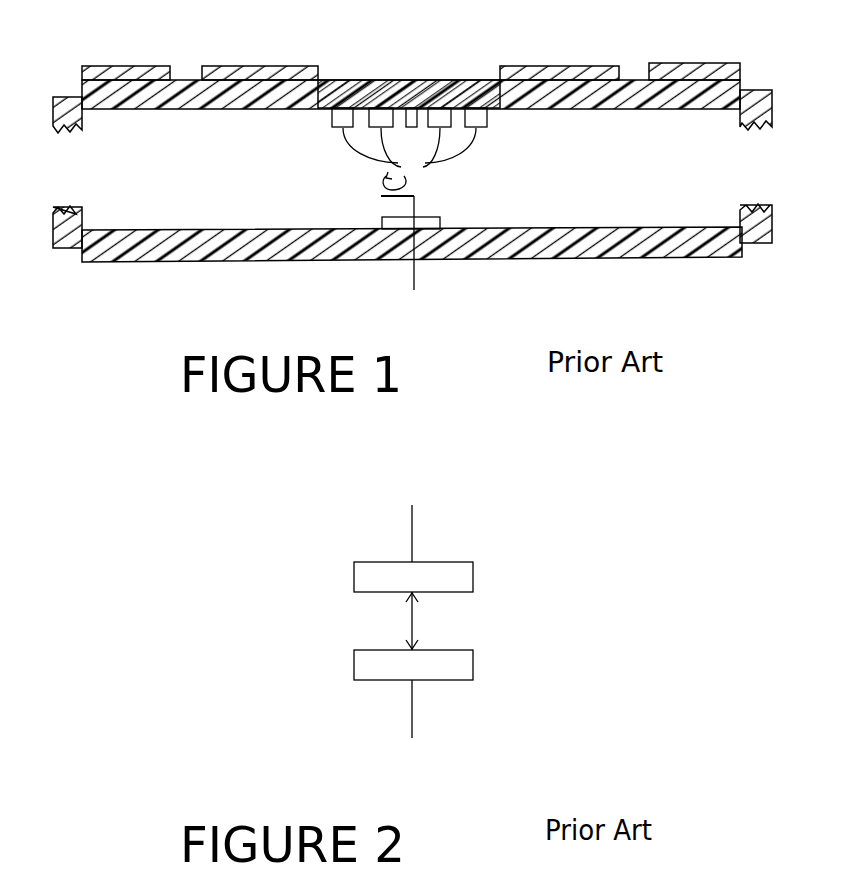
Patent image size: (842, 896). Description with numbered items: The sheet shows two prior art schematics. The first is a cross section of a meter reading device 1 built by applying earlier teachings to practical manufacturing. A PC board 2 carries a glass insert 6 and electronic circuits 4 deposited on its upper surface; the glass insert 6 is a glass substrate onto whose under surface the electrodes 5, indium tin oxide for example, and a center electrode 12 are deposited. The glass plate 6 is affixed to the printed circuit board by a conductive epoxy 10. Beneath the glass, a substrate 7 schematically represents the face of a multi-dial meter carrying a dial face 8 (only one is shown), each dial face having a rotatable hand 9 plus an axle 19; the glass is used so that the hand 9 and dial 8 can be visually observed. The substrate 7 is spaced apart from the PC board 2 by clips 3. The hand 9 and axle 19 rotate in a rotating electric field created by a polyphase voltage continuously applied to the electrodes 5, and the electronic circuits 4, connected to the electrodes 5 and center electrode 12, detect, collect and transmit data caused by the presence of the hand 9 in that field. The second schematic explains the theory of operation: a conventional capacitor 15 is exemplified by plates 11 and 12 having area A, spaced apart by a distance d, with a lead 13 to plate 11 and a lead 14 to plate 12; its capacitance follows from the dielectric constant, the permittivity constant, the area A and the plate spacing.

In FIG. 1, the meter reading device 1 is at (193, 285).
In FIG. 1, the PC board 2 is at (184, 92).
In FIG. 1, the clips 3 is at (84, 128).
In FIG. 1, the electronic circuits 4 is at (124, 72).
In FIG. 1, the electrodes 5 is at (409, 150).
In FIG. 1, the glass insert 6 is at (468, 92).
In FIG. 1, the substrate 7 is at (655, 244).
In FIG. 1, the dial face 8 is at (440, 222).
In FIG. 1, the hand 9 is at (400, 193).
In FIG. 1, the conductive epoxy 10 is at (322, 95).
In FIG. 1, the center electrode 12 is at (410, 106).
In FIG. 2, the center electrode 12 is at (460, 665).
In FIG. 1, the axle 19 is at (412, 206).
In FIG. 2, the plate 11 is at (458, 575).
In FIG. 2, the lead 13 is at (414, 536).
In FIG. 2, the lead 14 is at (414, 709).
In FIG. 2, the conventional capacitor 15 is at (296, 626).
In FIG. 2, the area A is at (455, 592).